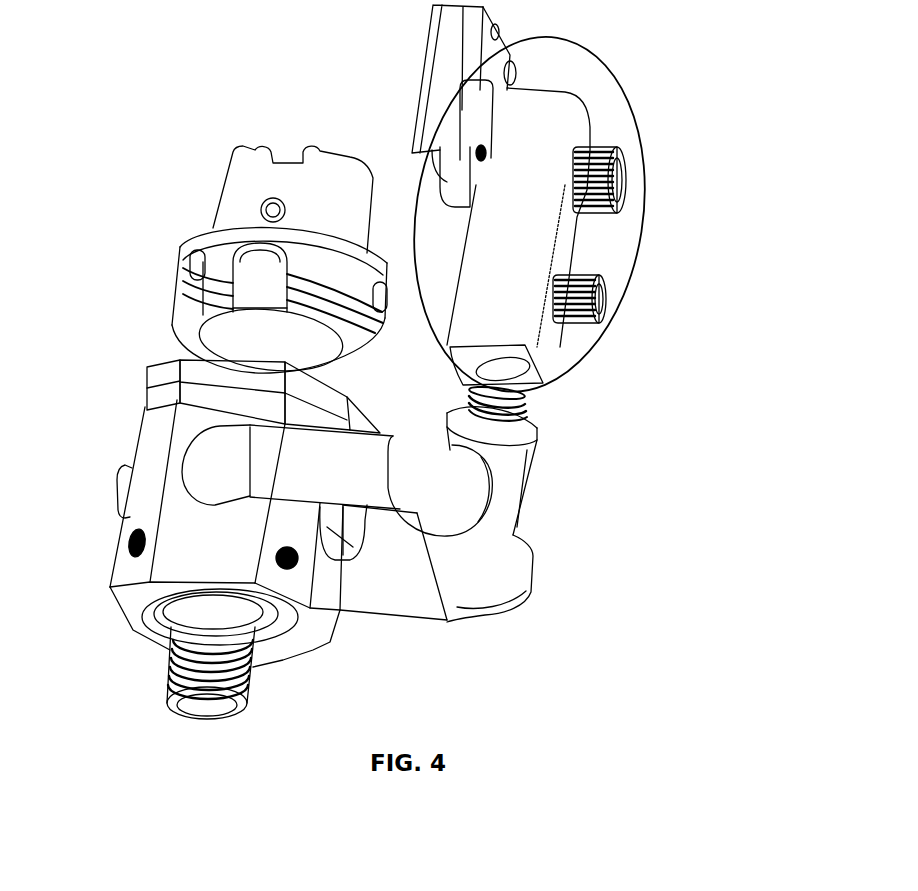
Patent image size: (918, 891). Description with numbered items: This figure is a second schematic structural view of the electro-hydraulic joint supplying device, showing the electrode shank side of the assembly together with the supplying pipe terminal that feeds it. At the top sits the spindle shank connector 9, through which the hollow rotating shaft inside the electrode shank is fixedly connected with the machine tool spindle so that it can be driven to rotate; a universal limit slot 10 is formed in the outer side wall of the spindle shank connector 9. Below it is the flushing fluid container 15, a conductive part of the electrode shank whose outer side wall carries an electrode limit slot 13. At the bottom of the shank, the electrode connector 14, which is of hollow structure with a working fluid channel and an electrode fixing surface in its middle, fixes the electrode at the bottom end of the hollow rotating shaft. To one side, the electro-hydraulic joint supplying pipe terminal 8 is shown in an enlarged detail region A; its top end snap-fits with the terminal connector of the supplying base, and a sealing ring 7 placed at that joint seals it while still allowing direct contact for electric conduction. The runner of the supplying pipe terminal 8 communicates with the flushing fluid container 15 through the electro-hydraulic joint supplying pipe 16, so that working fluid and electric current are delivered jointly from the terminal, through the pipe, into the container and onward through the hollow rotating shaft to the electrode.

The sealing ring 7 is at (530, 418).
The electro-hydraulic joint supplying pipe terminal 8 is at (497, 455).
The spindle shank connector 9 is at (297, 187).
The universal limit slot 10 is at (258, 282).
The electrode limit slot 13 is at (180, 365).
The electrode connector 14 is at (250, 688).
The flushing fluid container 15 is at (177, 497).
The electro-hydraulic joint supplying pipe 16 is at (400, 593).
The detail region A is at (640, 122).